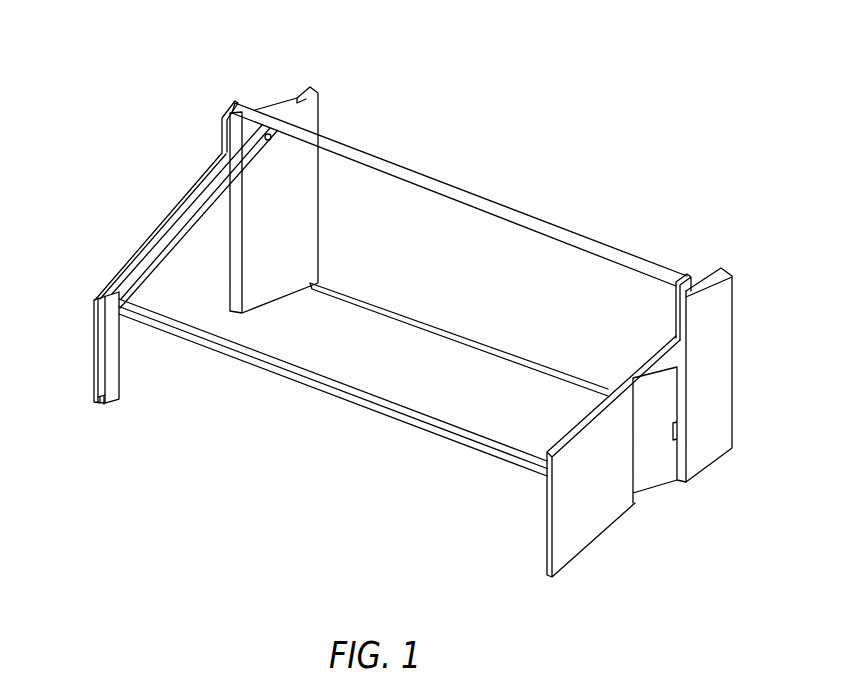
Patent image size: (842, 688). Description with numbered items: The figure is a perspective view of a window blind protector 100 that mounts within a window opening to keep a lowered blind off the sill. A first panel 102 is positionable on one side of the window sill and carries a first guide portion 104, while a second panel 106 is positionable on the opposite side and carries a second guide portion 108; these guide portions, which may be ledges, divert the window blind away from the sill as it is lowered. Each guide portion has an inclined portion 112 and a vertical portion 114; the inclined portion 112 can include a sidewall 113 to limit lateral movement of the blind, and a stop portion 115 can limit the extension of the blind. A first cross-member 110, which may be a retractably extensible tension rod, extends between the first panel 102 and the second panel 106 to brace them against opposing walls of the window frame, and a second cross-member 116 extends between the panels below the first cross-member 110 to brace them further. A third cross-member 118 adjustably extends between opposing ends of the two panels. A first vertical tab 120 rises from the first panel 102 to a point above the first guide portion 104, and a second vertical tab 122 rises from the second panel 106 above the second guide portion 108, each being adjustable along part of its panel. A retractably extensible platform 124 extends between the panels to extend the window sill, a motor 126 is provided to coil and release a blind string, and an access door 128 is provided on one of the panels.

The window blind protector 100 is at (407, 294).
The first panel 102 is at (323, 110).
The first guide portion 104 is at (297, 97).
The second panel 106 is at (727, 343).
The second guide portion 108 is at (724, 269).
The first cross-member 110 is at (485, 201).
The inclined portion 112 is at (180, 213).
The sidewall 113 is at (190, 175).
The vertical portion 114 is at (108, 347).
The stop portion 115 is at (106, 412).
The second cross-member 116 is at (470, 345).
The third cross-member 118 is at (443, 426).
The first vertical tab 120 is at (222, 113).
The second vertical tab 122 is at (690, 274).
The retractably extensible platform 124 is at (333, 398).
The motor 126 is at (268, 141).
The access door 128 is at (652, 477).